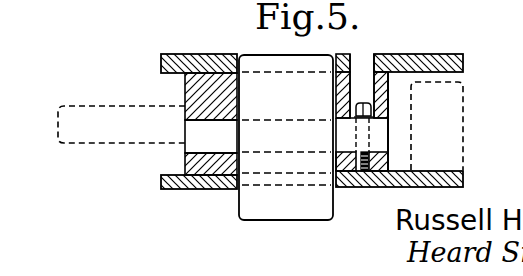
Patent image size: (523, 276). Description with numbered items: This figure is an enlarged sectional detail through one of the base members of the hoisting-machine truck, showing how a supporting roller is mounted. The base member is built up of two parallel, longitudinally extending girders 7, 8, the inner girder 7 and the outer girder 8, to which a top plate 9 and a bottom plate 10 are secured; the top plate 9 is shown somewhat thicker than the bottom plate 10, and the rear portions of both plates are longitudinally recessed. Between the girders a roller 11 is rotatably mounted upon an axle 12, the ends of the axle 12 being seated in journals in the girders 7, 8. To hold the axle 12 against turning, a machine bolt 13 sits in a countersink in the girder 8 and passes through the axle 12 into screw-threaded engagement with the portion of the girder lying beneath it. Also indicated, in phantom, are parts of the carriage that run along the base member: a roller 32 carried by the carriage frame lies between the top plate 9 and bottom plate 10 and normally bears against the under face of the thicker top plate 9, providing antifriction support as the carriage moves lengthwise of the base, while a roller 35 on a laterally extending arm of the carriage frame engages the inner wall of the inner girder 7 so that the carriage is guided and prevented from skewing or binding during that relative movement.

The girder 7 is at (188, 89).
The girder 8 is at (388, 103).
The top plate 9 is at (414, 58).
The bottom plate 10 is at (463, 175).
The roller 11 is at (310, 202).
The axle 12 is at (197, 143).
The machine bolt 13 is at (363, 173).
The roller 32 is at (455, 132).
The roller 35 is at (82, 143).